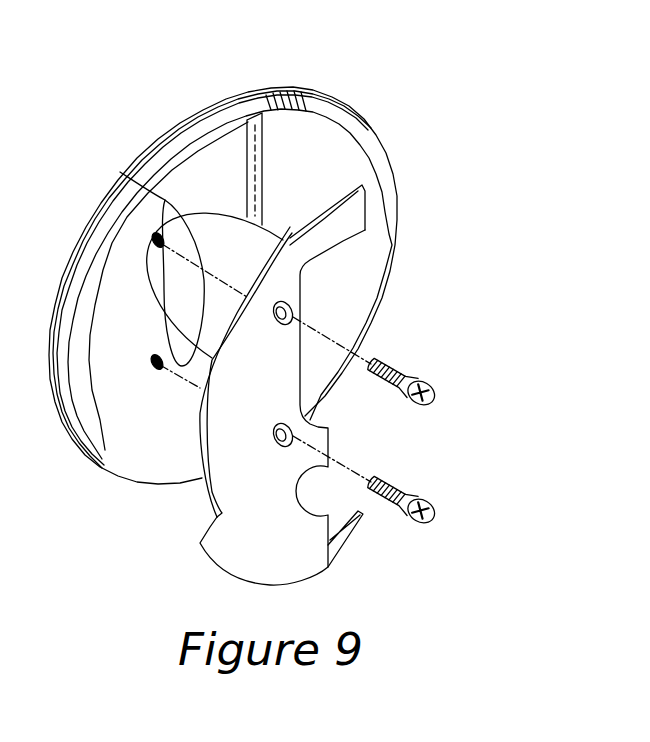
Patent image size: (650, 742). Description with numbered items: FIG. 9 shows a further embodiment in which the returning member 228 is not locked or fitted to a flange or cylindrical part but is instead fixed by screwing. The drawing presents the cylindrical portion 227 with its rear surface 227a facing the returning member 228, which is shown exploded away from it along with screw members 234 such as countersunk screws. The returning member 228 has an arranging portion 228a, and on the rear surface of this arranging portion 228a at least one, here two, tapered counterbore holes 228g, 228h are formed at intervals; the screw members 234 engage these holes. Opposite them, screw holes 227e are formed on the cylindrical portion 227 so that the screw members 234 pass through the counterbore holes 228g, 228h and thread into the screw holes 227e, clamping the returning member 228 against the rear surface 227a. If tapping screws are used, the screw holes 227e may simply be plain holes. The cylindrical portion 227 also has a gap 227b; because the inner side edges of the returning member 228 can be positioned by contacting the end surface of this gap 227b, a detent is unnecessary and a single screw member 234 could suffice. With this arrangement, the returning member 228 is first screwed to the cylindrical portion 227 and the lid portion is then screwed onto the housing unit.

The cylindrical portion 227 is at (272, 84).
The rear surface 227a is at (215, 152).
The gap 227b is at (248, 207).
The screw holes 227e is at (158, 238).
The returning member 228 is at (354, 182).
The arranging portion 228a is at (213, 480).
The tapered counterbore hole 228g is at (380, 226).
The tapered counterbore hole 228h is at (293, 313).
The screw members 234 is at (405, 374).